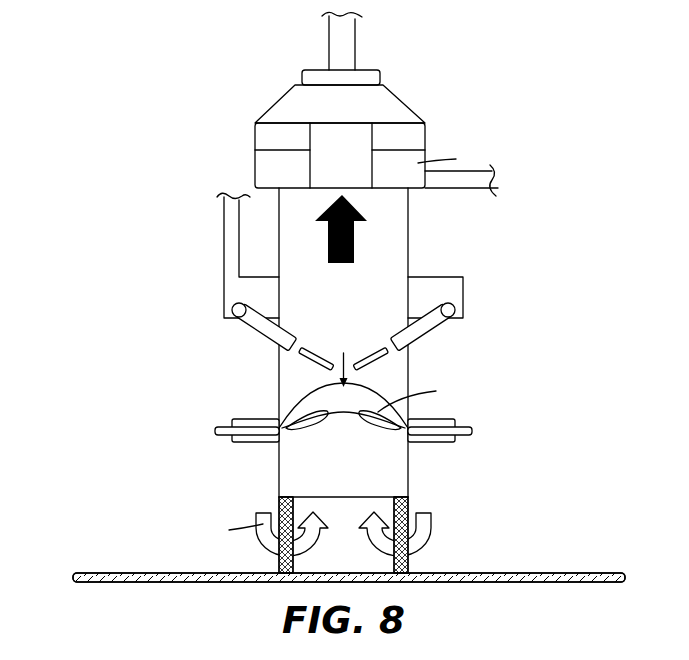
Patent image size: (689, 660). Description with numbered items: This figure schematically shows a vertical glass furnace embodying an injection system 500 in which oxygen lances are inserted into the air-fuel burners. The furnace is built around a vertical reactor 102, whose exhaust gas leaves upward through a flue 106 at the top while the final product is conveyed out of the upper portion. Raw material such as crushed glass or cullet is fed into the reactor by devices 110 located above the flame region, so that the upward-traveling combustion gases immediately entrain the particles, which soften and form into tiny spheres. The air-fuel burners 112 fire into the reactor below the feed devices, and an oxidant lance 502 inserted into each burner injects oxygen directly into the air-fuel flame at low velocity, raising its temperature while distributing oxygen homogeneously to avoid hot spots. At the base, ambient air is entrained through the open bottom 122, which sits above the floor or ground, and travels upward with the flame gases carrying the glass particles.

The injection system 500 is at (176, 124).
The flue 106 is at (340, 35).
The vertical reactor 102 is at (408, 238).
The devices 110 is at (266, 329).
The air-fuel burners 112 is at (250, 418).
The oxidant lance 502 is at (448, 442).
The open bottom 122 is at (408, 473).